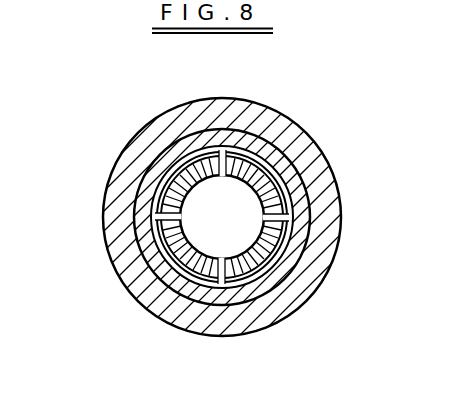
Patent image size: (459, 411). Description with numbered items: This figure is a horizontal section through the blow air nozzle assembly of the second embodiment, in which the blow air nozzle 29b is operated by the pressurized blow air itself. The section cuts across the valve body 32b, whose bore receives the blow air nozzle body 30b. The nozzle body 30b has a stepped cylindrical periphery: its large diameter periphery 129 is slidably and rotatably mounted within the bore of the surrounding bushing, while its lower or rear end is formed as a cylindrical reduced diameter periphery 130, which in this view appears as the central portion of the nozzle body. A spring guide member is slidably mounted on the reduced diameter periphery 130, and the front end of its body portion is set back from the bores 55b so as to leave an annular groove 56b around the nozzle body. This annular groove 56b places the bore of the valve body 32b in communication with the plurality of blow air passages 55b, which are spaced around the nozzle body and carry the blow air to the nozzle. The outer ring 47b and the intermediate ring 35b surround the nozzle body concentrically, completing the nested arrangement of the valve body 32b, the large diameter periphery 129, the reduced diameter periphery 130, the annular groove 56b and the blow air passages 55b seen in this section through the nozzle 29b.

The valve body 32b is at (104, 237).
The outer housing ring 47b is at (270, 145).
The outer race sleeve 35b is at (294, 185).
The large diameter periphery 129 is at (295, 181).
The blow air nozzle body 30b is at (283, 250).
The blow air nozzle 29b is at (246, 286).
The annular groove 56b is at (251, 268).
The reduced diameter periphery 130 is at (196, 178).
The blow air passages 55b is at (225, 157).